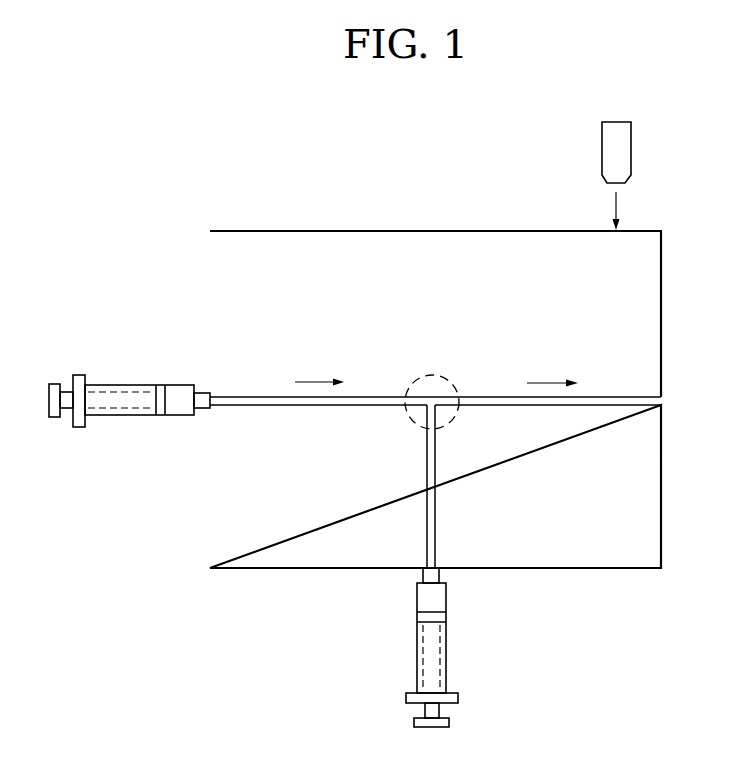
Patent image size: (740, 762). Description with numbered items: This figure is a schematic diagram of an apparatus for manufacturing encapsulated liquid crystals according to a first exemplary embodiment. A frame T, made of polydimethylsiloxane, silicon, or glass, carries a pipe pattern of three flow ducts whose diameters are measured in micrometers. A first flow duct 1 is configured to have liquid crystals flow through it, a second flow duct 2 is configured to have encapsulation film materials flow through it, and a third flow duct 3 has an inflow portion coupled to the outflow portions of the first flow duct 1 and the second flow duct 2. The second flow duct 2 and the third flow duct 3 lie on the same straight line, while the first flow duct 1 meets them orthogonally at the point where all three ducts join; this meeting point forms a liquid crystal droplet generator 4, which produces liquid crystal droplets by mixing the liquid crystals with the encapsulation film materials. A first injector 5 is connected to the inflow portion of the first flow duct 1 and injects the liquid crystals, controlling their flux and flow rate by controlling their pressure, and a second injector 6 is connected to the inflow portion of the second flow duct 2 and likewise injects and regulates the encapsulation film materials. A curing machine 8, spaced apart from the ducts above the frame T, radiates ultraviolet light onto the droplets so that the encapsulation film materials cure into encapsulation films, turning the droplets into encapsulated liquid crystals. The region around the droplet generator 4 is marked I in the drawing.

The first flow duct 1 is at (436, 548).
The second flow duct 2 is at (257, 402).
The third flow duct 3 is at (622, 402).
The liquid crystal droplet generator 4 is at (434, 397).
The first injector 5 is at (446, 636).
The second injector 6 is at (120, 416).
The curing machine 8 is at (632, 132).
The frame T is at (306, 254).
The observed region I is at (412, 378).